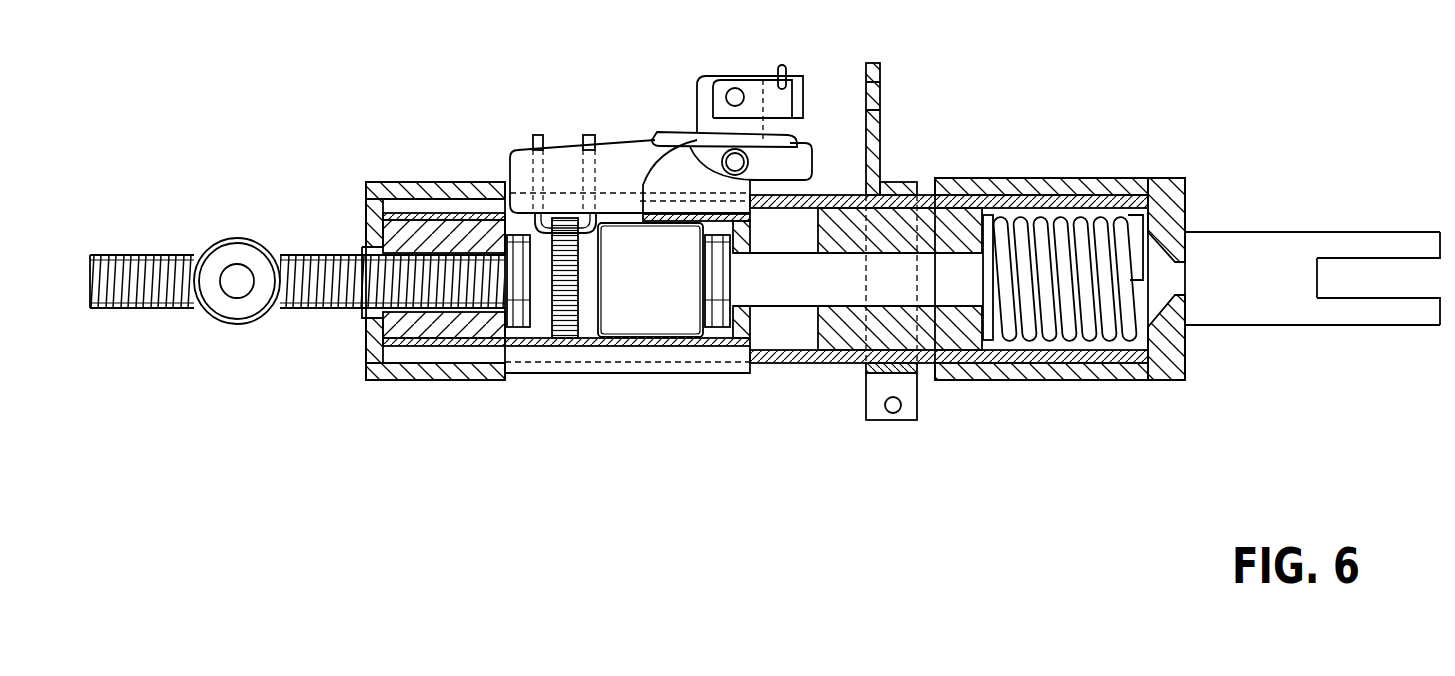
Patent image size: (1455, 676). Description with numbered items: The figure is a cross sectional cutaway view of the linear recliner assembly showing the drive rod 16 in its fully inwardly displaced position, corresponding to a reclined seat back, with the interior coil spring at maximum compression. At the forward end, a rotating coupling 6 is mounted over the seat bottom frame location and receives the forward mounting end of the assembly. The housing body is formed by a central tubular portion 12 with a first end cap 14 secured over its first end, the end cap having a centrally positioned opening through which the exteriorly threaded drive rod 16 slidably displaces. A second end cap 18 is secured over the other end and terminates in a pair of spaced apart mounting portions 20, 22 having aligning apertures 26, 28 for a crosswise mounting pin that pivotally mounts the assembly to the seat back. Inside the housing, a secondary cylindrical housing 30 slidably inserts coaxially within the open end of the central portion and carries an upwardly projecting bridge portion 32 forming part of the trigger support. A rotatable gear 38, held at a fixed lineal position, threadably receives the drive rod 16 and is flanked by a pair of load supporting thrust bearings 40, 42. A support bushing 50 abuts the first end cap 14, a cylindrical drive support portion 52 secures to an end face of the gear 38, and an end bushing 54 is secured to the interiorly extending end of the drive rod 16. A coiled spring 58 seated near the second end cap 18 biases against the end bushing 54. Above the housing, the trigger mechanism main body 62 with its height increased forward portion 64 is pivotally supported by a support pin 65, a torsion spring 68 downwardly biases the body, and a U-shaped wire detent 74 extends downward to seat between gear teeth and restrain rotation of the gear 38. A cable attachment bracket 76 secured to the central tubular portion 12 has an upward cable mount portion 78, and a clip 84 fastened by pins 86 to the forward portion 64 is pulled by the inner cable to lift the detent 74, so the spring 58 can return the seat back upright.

The rotating coupling 6 is at (226, 302).
The central tubular portion 12 is at (822, 363).
The first end cap 14 is at (422, 181).
The drive rod 16 is at (133, 256).
The second end cap 18 is at (1105, 177).
The mounting portion 20 is at (1348, 235).
The mounting portion 22 is at (1342, 317).
The aperture 26 is at (1392, 235).
The aperture 28 is at (1397, 320).
The secondary housing 30 is at (627, 348).
The bridge portion 32 is at (802, 140).
The rotatable gear 38 is at (565, 340).
The thrust bearing 40 is at (520, 345).
The thrust bearing 42 is at (718, 350).
The support bushing 50 is at (412, 224).
The drive support portion 52 is at (655, 346).
The end bushing 54 is at (955, 223).
The coiled spring 58 is at (1120, 345).
The main body 62 is at (627, 158).
The forward portion 64 is at (705, 90).
The support pin 65 is at (805, 156).
The torsion spring 68 is at (697, 150).
The detent 74 is at (533, 135).
The cable attachment bracket 76 is at (898, 375).
The cable mount portion 78 is at (883, 75).
The clip 84 is at (765, 80).
The pin 86 is at (735, 97).